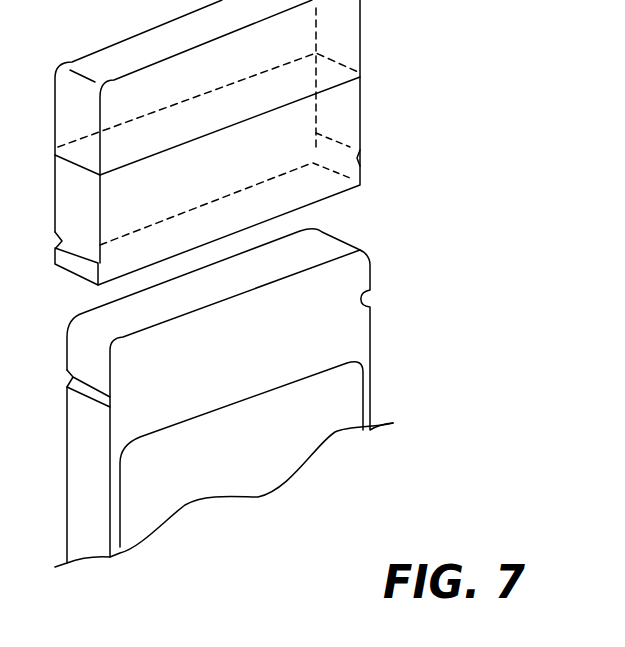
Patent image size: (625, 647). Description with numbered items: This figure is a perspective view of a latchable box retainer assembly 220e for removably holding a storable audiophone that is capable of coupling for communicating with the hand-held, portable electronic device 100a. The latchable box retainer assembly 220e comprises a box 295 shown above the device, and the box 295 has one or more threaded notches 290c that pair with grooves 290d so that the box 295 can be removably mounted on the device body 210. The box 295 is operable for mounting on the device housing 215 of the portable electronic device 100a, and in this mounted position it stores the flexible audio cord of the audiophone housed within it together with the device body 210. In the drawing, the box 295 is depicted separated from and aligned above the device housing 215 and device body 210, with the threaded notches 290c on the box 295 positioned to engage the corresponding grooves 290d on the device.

The hand-held, portable electronic device 100a is at (452, 174).
The box 295 is at (361, 93).
The latchable box retainer assembly 220e is at (355, 158).
The threaded notches 290c is at (112, 261).
The device housing 215 is at (341, 240).
The device body 210 is at (313, 416).
The grooves 290d is at (118, 398).